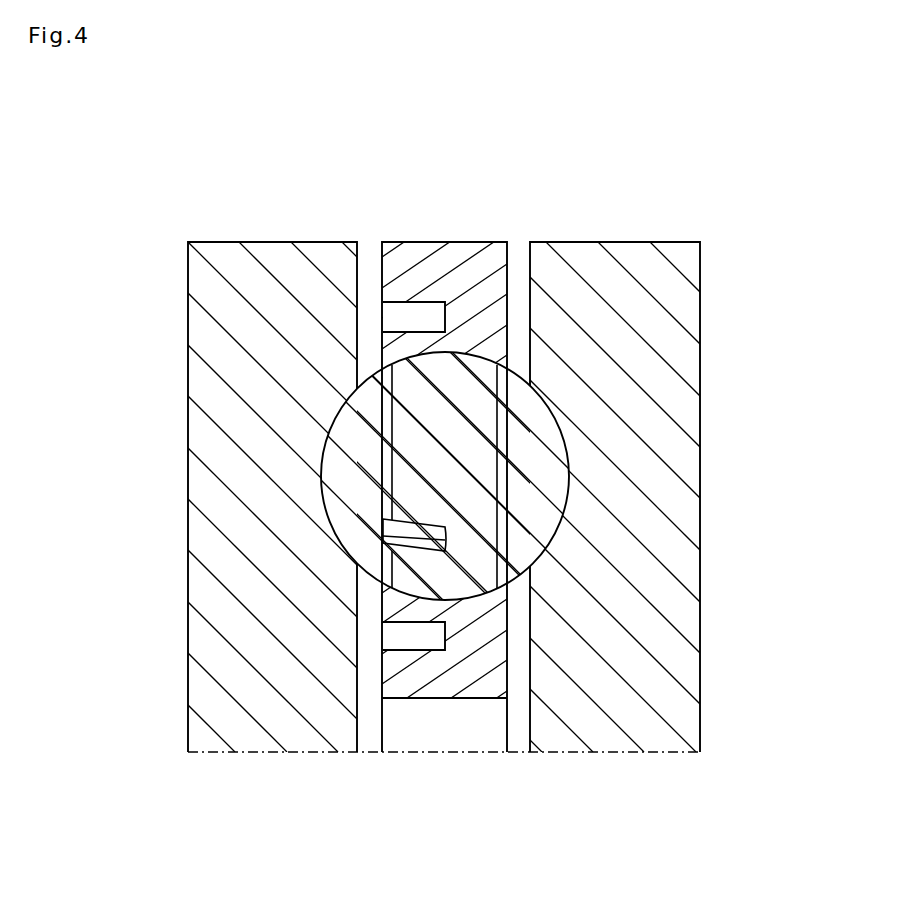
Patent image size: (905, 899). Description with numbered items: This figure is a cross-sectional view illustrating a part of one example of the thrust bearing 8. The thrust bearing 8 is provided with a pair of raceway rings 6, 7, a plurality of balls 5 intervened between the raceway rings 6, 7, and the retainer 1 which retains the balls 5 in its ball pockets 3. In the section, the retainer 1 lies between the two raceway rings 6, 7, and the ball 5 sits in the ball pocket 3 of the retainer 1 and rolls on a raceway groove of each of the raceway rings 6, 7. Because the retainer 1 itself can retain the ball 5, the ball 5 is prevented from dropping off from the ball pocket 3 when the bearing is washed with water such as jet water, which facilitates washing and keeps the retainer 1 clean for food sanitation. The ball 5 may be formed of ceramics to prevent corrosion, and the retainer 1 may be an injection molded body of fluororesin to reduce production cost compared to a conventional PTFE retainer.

The retainer 1 is at (440, 275).
The ball pocket 3 is at (380, 353).
The ball 5 is at (525, 420).
The raceway ring 6 is at (205, 488).
The raceway ring 7 is at (663, 473).
The thrust bearing 8 is at (718, 252).